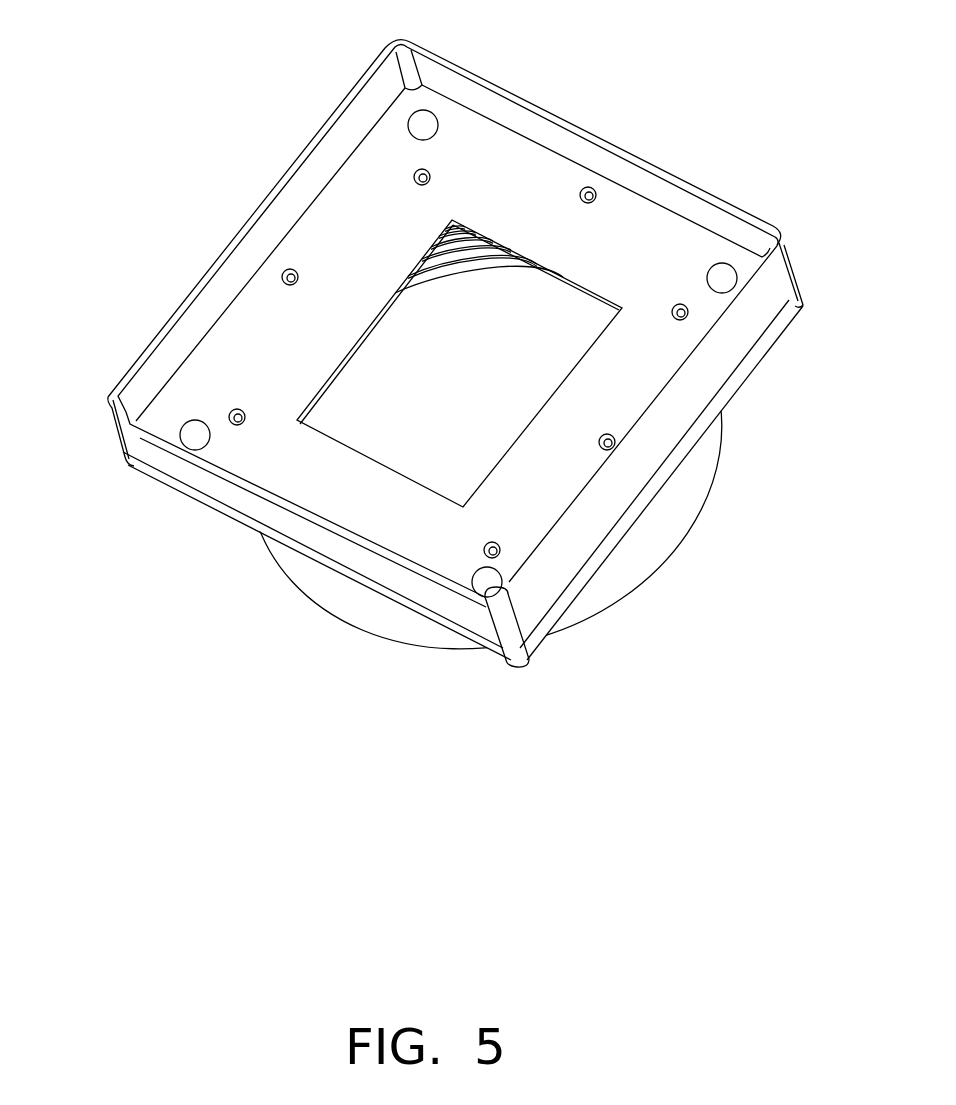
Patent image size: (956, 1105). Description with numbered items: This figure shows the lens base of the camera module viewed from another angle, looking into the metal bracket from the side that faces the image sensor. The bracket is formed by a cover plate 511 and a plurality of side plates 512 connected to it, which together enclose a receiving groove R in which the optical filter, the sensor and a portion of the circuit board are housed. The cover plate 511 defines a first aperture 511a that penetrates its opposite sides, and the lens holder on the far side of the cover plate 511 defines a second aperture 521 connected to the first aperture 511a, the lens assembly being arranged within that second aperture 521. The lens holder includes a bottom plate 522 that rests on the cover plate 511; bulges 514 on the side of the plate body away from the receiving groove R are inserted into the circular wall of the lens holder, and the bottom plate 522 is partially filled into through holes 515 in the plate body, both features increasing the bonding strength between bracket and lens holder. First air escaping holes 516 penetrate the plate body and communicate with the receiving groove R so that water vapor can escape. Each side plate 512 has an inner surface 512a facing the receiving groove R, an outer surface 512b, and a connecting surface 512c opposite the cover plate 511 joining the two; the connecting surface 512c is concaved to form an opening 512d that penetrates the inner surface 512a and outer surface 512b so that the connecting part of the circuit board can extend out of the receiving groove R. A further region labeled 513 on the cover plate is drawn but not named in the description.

The cover plate 511 is at (343, 390).
The first aperture 511a is at (438, 325).
The side plates 512 is at (382, 80).
The inner surface 512a is at (334, 518).
The outer surface 512b is at (430, 600).
The connecting surface 512c is at (375, 558).
The opening 512d is at (460, 603).
The bottom plate 513 is at (672, 240).
The bulges 514 is at (282, 277).
The through holes 515 is at (435, 113).
The first air escaping holes 516 is at (227, 422).
The second aperture 521 is at (575, 625).
The bottom plate 522 is at (587, 570).
The receiving groove R is at (250, 362).